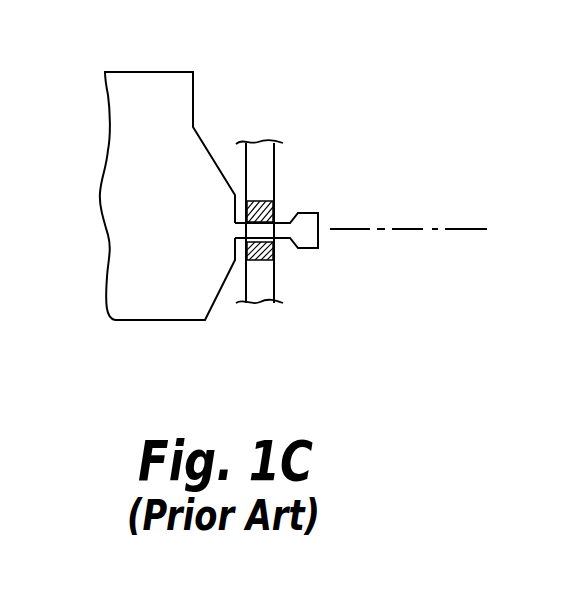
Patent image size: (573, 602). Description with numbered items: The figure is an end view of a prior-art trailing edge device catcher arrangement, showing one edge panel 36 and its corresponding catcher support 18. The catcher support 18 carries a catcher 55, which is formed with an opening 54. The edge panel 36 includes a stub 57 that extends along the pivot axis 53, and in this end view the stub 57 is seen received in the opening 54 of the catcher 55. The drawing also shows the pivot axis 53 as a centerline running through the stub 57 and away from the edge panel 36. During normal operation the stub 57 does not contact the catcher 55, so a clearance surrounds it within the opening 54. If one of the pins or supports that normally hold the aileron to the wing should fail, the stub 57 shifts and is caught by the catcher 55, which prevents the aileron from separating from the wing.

The edge panel 36 is at (150, 73).
The catcher support 18 is at (258, 150).
The catcher 55 is at (275, 207).
The opening 54 is at (248, 233).
The stub 57 is at (320, 250).
The pivot axis 53 is at (425, 230).